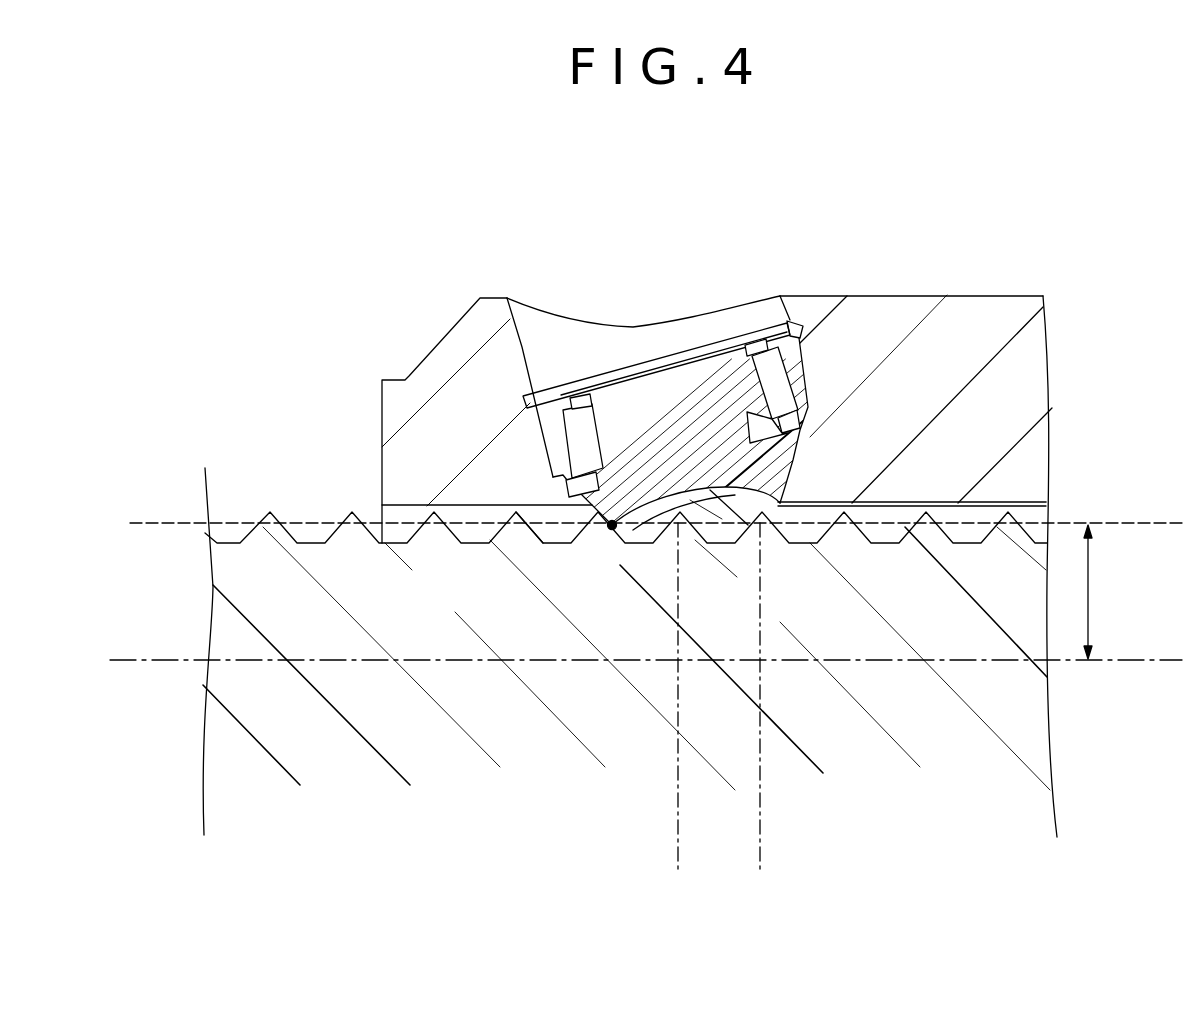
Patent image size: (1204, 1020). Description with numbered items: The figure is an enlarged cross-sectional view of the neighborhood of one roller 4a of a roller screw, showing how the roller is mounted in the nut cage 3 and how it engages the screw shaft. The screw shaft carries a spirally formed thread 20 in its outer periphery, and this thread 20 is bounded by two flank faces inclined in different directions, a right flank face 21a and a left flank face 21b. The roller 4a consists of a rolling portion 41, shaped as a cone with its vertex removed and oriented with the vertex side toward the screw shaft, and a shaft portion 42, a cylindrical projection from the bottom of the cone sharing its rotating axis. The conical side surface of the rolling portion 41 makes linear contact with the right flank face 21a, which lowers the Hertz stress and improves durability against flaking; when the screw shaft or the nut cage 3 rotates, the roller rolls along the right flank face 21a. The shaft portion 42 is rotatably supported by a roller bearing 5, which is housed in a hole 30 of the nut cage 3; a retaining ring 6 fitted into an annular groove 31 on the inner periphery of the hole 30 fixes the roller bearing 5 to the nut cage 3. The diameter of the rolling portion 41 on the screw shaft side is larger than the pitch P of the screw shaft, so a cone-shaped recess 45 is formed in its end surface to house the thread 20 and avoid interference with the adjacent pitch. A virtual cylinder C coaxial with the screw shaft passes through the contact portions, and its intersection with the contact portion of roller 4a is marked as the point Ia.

The nut cage 3 is at (973, 296).
The roller 4a is at (670, 407).
The roller bearing 5 is at (548, 450).
The retaining ring 6 is at (756, 331).
The thread 20 is at (630, 566).
The right flank face 21a is at (648, 544).
The left flank face 21b is at (542, 540).
The hole 30 is at (522, 350).
The annular groove 31 is at (797, 320).
The rolling portion 41 is at (772, 472).
The shaft portion 42 is at (728, 417).
The cone-shaped recess 45 is at (746, 547).
The intersection point Ia is at (602, 544).
The virtual cylinder C is at (1128, 522).
The pitch P is at (754, 857).